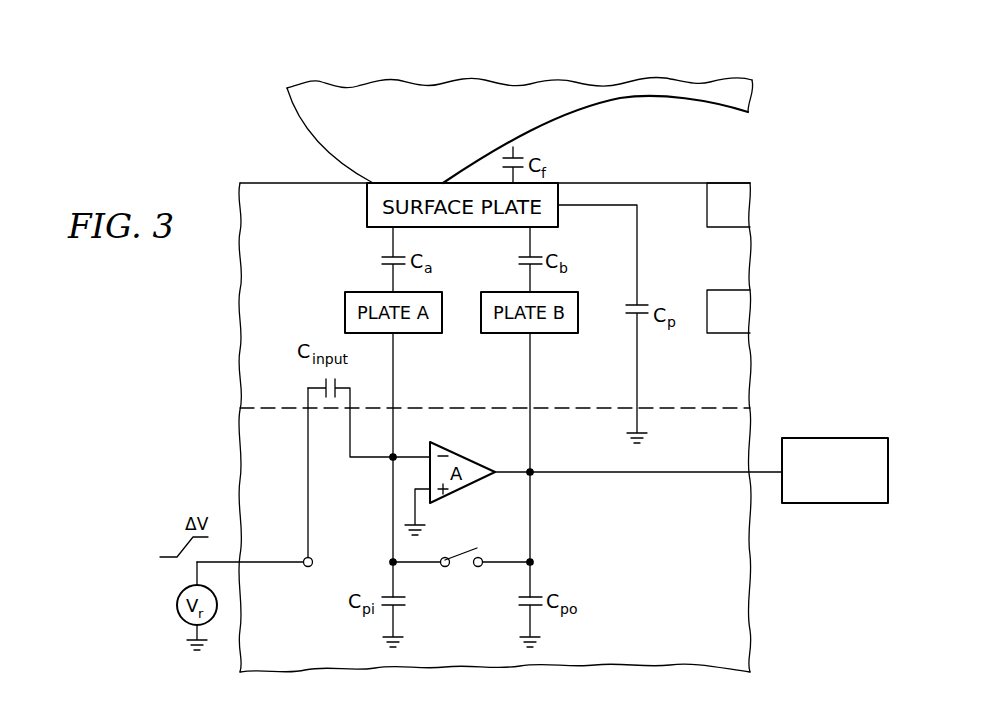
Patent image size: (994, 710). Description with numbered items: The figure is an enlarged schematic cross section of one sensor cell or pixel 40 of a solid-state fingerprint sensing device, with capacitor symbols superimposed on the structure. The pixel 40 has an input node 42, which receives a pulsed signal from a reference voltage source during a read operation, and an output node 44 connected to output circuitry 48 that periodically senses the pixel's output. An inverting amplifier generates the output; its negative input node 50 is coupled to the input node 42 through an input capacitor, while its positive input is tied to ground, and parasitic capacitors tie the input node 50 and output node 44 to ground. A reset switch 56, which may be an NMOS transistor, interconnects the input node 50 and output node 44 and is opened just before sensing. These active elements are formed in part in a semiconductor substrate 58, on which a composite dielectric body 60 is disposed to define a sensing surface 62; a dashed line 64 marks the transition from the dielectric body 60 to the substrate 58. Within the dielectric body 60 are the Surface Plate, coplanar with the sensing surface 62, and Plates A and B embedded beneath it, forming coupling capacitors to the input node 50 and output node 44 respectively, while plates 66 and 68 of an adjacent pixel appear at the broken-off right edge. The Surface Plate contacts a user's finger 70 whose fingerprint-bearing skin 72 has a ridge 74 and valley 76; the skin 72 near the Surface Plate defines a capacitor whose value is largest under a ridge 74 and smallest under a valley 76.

The sensor cell or pixel 40 is at (175, 330).
The input node 42 is at (305, 570).
The output node 44 is at (537, 478).
The output circuitry 48 is at (835, 438).
The input node of inverting amplifier 50 is at (388, 463).
The reset switch 56 is at (462, 566).
The semiconductor substrate 58 is at (752, 620).
The composite dielectric body 60 is at (240, 292).
The sensing surface 62 is at (618, 183).
The dashed line 64 is at (440, 405).
The plate of adjacent pixel 66 is at (752, 206).
The plate of adjacent pixel 68 is at (750, 313).
The finger 70 is at (358, 90).
The fingerprint-bearing skin 72 is at (318, 145).
The fingerprint ridge 74 is at (416, 181).
The fingerprint valley 76 is at (684, 108).